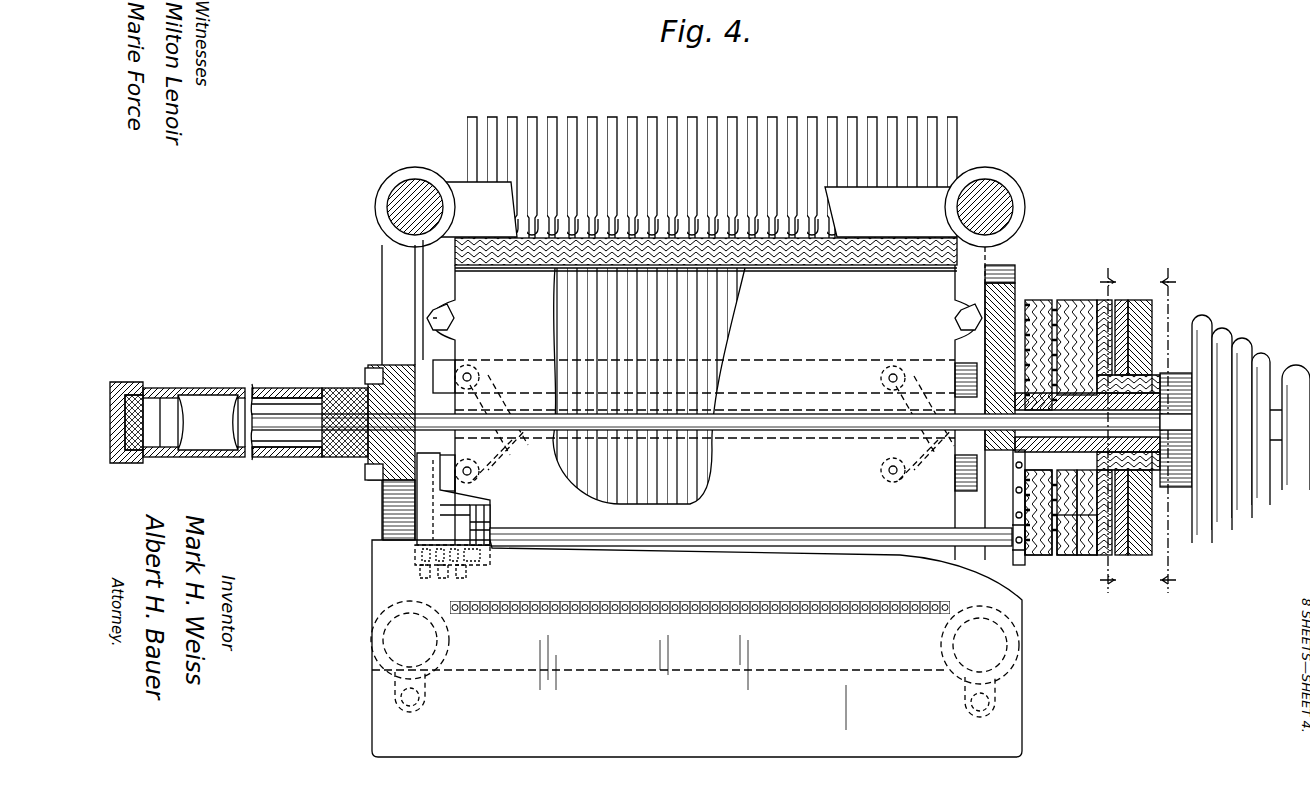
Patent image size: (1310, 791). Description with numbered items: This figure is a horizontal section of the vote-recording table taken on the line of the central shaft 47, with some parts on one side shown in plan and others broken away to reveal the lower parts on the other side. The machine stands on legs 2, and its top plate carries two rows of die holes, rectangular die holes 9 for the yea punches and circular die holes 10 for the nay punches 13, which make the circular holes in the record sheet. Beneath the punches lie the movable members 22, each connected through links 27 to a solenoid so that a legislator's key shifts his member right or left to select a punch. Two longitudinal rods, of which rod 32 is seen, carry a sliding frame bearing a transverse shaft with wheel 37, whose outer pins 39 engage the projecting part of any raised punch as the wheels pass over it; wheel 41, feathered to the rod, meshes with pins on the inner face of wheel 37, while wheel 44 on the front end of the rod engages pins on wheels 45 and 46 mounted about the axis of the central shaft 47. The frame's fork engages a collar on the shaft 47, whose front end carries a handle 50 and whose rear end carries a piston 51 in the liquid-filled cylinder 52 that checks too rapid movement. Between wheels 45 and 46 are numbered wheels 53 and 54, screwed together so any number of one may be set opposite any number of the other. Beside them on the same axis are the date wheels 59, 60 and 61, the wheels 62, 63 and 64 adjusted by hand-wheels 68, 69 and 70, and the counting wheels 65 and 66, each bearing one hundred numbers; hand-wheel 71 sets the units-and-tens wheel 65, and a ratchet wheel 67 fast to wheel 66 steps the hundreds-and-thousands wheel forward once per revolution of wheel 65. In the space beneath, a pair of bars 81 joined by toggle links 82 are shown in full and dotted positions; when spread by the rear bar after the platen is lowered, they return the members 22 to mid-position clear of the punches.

The legs 2 is at (392, 207).
The rectangular die holes 9 is at (692, 608).
The circular die holes 10 is at (1169, 435).
The nay punches 13 is at (874, 266).
The movable members 22 is at (690, 365).
The links 27 is at (692, 122).
The rod 32 is at (768, 523).
The wheel 37 is at (488, 566).
The pins 39 is at (460, 580).
The wheel 41 is at (490, 520).
The wheel 44 is at (1020, 600).
The wheel 45 is at (1033, 300).
The wheel 46 is at (1062, 300).
The central shaft 47 is at (748, 414).
The handle 50 is at (1235, 415).
The piston 51 is at (130, 463).
The cylinder 52 is at (210, 398).
The wheel 53 is at (1040, 300).
The wheel 54 is at (1055, 300).
The date wheel 59 is at (1052, 555).
The date wheel 60 is at (1063, 555).
The date wheel 61 is at (1072, 556).
The wheel 62 is at (1084, 556).
The wheel 63 is at (1103, 556).
The wheel 64 is at (1104, 300).
The units and tens wheel 65 is at (1121, 300).
The hundreds and thousands wheel 66 is at (1140, 300).
The ratchet wheel 67 is at (1145, 556).
The hand-wheel 68 is at (1262, 358).
The hand-wheel 69 is at (1244, 343).
The hand-wheel 70 is at (1222, 332).
The hand-wheel 71 is at (1200, 318).
The bars 81 is at (912, 364).
The toggle links 82 is at (880, 381).